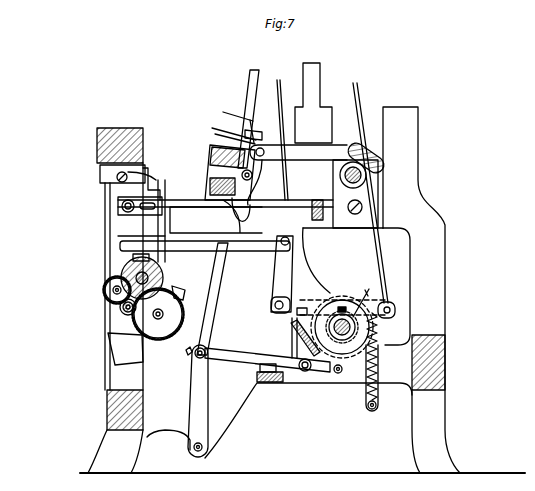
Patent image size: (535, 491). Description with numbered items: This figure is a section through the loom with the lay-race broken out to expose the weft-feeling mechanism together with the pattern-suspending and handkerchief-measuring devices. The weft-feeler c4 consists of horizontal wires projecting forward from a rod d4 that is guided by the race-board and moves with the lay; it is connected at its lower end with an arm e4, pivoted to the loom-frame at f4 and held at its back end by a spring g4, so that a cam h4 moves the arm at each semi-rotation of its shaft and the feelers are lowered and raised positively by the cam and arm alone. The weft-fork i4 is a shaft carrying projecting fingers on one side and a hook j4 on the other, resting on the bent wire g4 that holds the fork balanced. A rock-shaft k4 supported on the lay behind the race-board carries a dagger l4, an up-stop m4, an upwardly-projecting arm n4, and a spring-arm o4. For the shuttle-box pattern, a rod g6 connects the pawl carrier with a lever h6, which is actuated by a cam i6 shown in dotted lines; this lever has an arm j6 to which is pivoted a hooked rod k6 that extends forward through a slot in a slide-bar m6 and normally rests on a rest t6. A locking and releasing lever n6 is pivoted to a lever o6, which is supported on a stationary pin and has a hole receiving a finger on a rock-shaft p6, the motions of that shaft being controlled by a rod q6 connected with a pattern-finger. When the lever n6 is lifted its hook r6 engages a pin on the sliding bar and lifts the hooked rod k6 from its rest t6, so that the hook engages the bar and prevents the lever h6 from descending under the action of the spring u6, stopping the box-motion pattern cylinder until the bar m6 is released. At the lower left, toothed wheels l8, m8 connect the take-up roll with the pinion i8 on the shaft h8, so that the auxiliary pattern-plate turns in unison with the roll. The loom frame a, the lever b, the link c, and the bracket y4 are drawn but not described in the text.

The frame a is at (274, 290).
The lever b is at (372, 168).
The link c is at (197, 401).
The weft-feeler c4 is at (230, 111).
The weft-fork i4 is at (215, 130).
The spring g4 is at (292, 328).
The up-stop m4 is at (212, 172).
The dagger l4 is at (210, 185).
The bracket y4 is at (150, 172).
The lever o6 is at (159, 186).
The upwardly-projecting arm n4 is at (254, 124).
The hook j4 is at (256, 130).
The rock-shaft k4 is at (253, 175).
The rock-shaft p6 is at (254, 137).
The spring-arm o4 is at (249, 210).
The rod q6 is at (285, 137).
The rod g6 is at (363, 85).
The locking and releasing lever n6 is at (170, 212).
The slide-bar m6 is at (120, 240).
The hooked rod k6 is at (248, 250).
The rest t6 is at (128, 268).
The shaft h8 is at (104, 292).
The toothed wheel l8 is at (118, 310).
The toothed wheel m8 is at (125, 342).
The pinion i8 is at (165, 338).
The hook r6 is at (181, 288).
The rod d4 is at (216, 296).
The arm e4 is at (232, 358).
The pivot f4 is at (305, 372).
The arm j6 is at (282, 274).
The lever h6 is at (339, 307).
The cam h4 is at (342, 323).
The spring u6 is at (380, 363).
The cam i6 is at (360, 350).